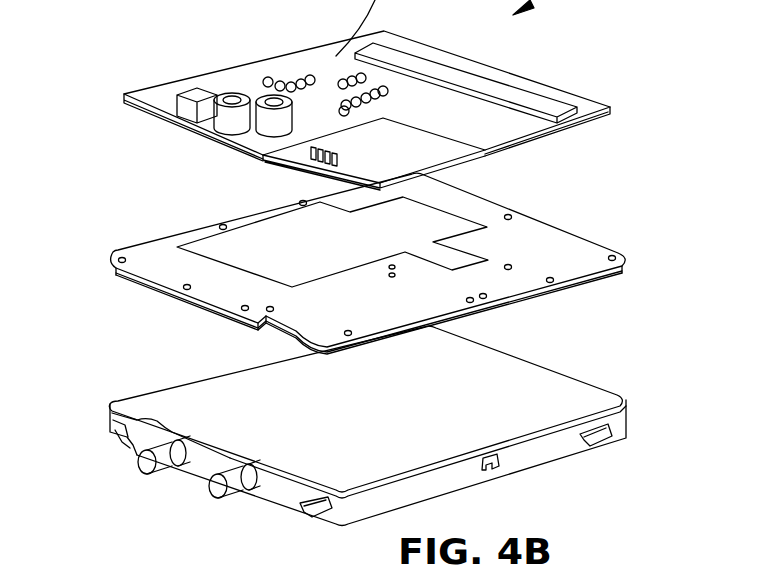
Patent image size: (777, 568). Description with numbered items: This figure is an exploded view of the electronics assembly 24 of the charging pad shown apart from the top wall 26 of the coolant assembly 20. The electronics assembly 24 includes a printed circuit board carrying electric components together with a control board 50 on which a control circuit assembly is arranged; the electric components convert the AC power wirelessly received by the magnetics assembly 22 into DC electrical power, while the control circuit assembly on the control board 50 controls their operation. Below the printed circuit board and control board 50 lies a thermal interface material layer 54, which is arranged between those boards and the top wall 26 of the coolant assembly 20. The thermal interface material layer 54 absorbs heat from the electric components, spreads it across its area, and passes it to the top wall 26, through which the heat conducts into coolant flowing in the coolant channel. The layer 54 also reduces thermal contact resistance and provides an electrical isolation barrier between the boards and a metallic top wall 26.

The coolant assembly 20 is at (203, 461).
The magnetics assembly 22 is at (530, 482).
The electronics assembly 24 is at (89, 60).
The top wall 26 is at (527, 383).
The control board 50 is at (393, 146).
The thermal interface material layer 54 is at (560, 231).